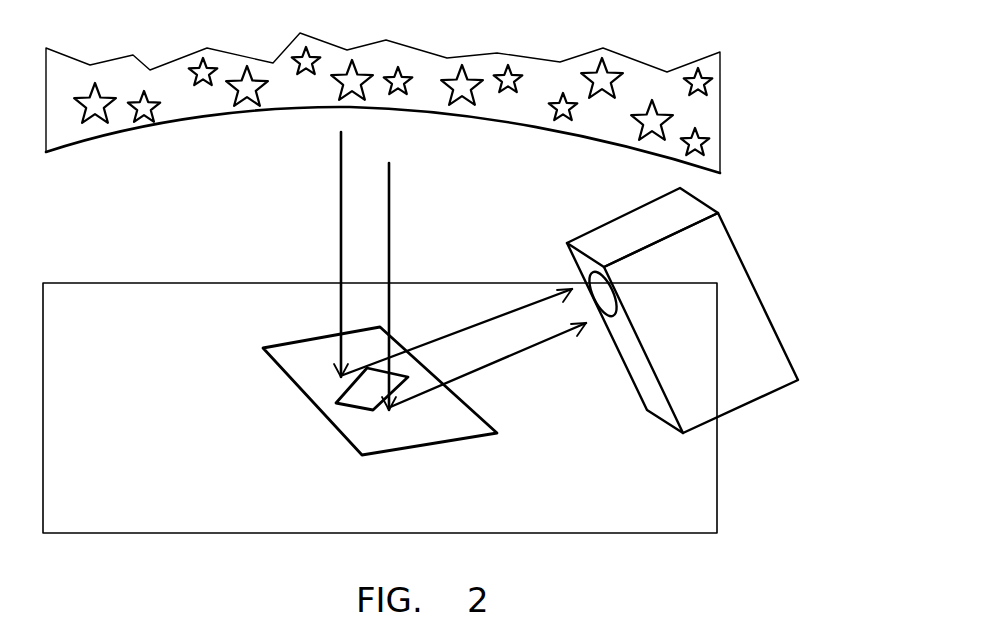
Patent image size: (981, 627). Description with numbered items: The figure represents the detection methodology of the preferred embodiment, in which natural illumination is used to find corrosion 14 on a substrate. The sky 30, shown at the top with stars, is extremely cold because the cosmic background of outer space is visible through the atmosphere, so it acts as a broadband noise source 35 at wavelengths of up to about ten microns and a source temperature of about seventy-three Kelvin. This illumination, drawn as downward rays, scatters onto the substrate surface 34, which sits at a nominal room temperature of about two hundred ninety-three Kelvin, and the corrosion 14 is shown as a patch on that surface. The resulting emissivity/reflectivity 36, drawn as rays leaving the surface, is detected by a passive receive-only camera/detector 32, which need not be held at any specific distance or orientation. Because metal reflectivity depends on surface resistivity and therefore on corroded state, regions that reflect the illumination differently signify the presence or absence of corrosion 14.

The corrosion 14 is at (363, 397).
The sky 30 is at (183, 103).
The camera/detector 32 is at (698, 308).
The substrate surface 34 is at (308, 360).
The broadband noise source 35 is at (342, 210).
The emissivity/reflectivity 36 is at (487, 362).